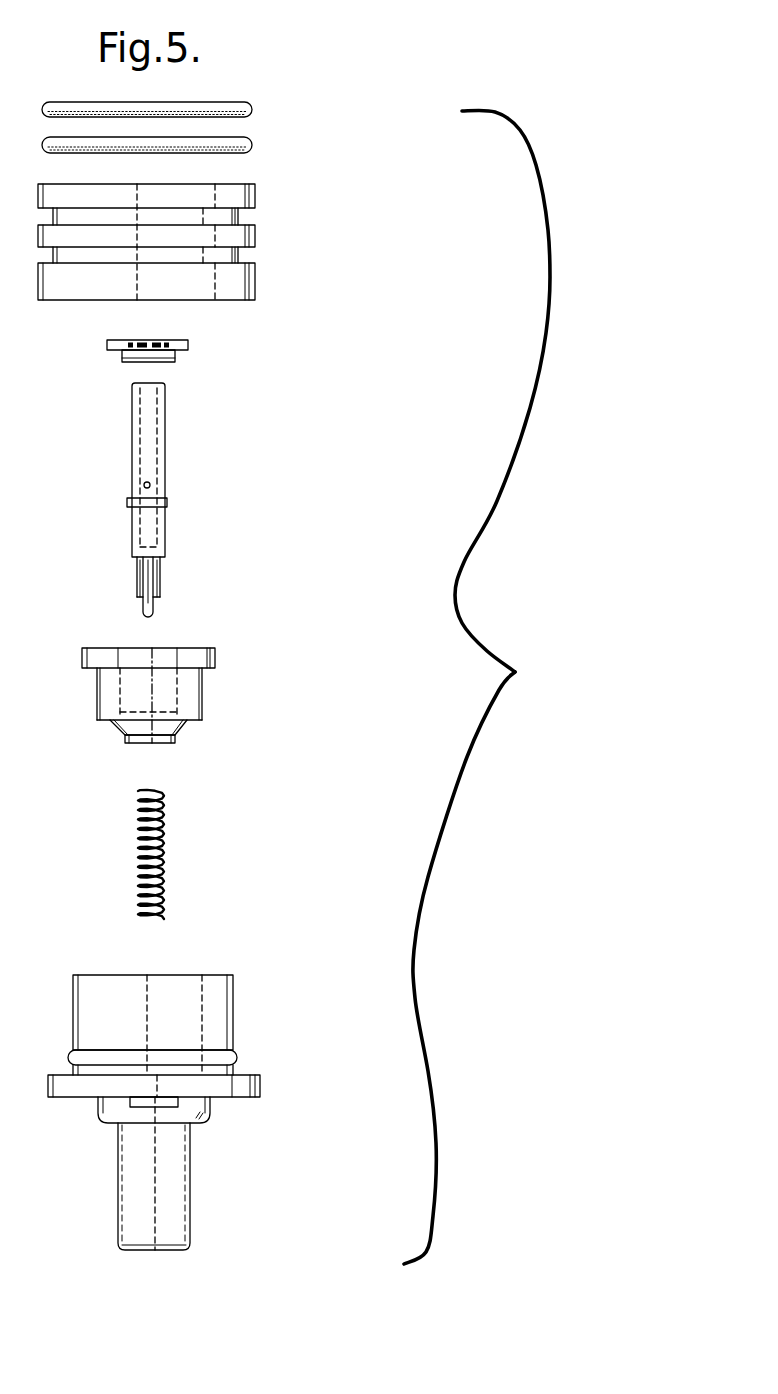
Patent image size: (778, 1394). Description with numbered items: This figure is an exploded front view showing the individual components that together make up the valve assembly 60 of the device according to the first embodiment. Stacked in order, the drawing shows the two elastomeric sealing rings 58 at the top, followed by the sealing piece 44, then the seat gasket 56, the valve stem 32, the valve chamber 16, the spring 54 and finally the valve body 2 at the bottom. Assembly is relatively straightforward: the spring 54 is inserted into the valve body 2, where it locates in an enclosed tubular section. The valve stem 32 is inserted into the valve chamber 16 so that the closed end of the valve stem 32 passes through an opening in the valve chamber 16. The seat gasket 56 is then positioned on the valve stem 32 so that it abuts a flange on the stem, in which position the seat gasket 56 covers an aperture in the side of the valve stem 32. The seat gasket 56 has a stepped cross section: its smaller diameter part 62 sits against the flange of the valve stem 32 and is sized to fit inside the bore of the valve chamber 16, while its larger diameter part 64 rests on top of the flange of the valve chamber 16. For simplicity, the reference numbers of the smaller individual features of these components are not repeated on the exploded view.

The valve assembly 60 is at (290, 62).
The elastomeric sealing rings 58 is at (253, 106).
The sealing piece 44 is at (276, 279).
The seat gasket 56 is at (162, 357).
The larger diameter part 64 is at (107, 343).
The smaller diameter part 62 is at (122, 357).
The valve stem 32 is at (178, 476).
The valve chamber 16 is at (215, 702).
The spring 54 is at (167, 840).
The valve body 2 is at (247, 1026).